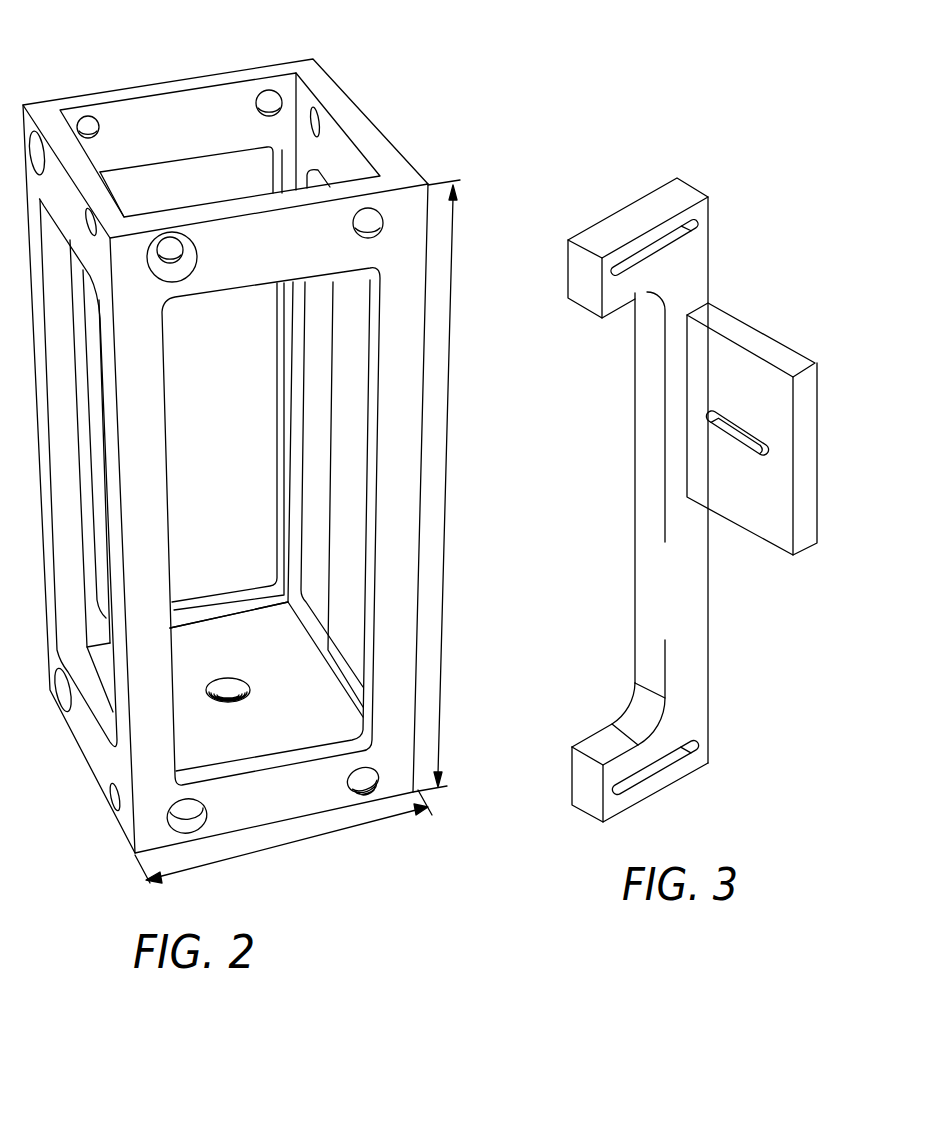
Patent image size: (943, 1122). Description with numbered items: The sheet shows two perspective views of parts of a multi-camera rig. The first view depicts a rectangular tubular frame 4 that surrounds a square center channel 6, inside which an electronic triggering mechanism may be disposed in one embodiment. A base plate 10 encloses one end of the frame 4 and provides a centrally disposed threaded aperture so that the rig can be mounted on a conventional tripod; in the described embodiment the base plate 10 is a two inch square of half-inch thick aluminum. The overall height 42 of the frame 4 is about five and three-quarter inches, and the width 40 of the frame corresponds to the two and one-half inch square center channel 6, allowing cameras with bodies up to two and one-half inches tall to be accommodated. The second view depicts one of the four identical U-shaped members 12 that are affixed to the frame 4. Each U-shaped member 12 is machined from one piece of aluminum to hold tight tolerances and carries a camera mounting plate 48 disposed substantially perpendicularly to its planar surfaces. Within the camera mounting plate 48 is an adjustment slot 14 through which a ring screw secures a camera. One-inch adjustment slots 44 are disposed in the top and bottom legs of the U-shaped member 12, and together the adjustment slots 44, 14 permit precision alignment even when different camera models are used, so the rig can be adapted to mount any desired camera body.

In FIG. 2, the rectangular tubular frame 4 is at (367, 136).
In FIG. 2, the center channel 6 is at (210, 106).
In FIG. 2, the base plate 10 is at (250, 628).
In FIG. 2, the width of frame 40 is at (297, 872).
In FIG. 2, the height of frame 42 is at (480, 437).
In FIG. 3, the U-shaped member 12 is at (687, 197).
In FIG. 3, the adjustment slot 14 is at (695, 414).
In FIG. 3, the adjustment slots 44 is at (707, 210).
In FIG. 3, the camera mounting plate 48 is at (757, 342).